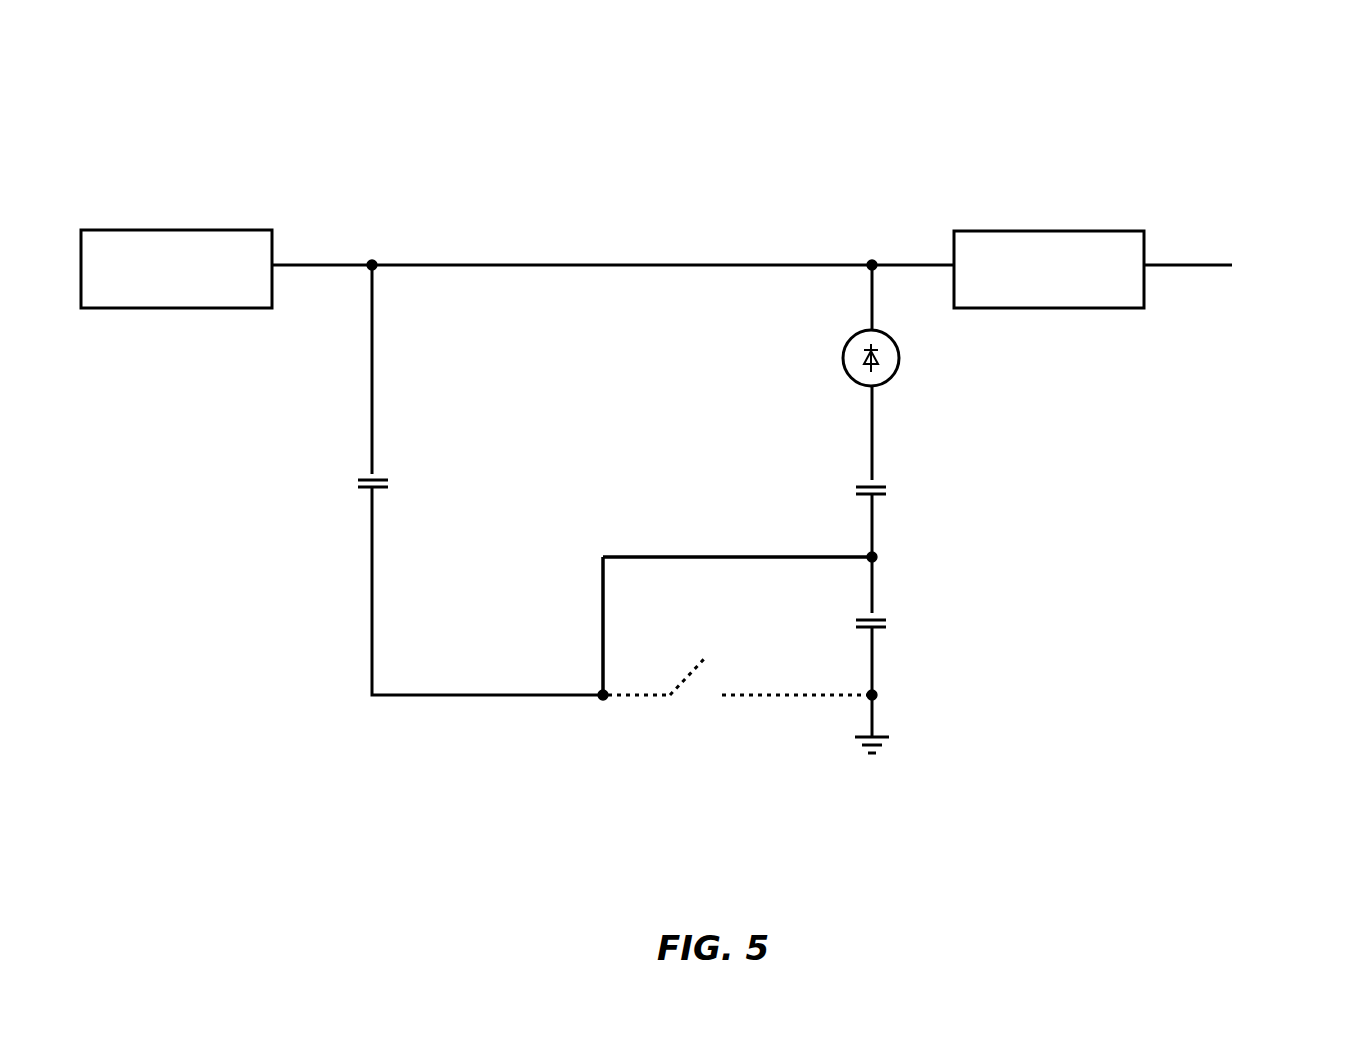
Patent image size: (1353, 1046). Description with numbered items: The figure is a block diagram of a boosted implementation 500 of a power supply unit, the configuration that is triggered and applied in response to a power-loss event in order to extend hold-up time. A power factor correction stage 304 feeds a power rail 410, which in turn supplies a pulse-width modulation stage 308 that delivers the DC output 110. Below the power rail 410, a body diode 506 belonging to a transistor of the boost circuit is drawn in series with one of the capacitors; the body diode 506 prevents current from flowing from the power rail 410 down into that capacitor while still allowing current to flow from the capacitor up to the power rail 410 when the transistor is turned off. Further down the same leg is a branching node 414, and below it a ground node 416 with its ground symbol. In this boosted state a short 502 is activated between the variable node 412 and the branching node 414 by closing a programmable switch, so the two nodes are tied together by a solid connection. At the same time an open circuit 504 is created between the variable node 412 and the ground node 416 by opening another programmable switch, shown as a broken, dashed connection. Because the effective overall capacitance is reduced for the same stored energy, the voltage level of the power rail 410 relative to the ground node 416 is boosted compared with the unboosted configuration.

The boosted implementation 500 is at (148, 134).
The power factor correction (PFC) stage 304 is at (176, 269).
The pulse-width modulation (PWM) stage 308 is at (1049, 269).
The DC output 110 is at (1233, 275).
The power rail 410 is at (872, 265).
The body diode 506 is at (943, 374).
The branching node 414 is at (872, 557).
The short 502 is at (603, 603).
The open circuit 504 is at (687, 677).
The variable node 412 is at (603, 697).
The ground node 416 is at (875, 697).